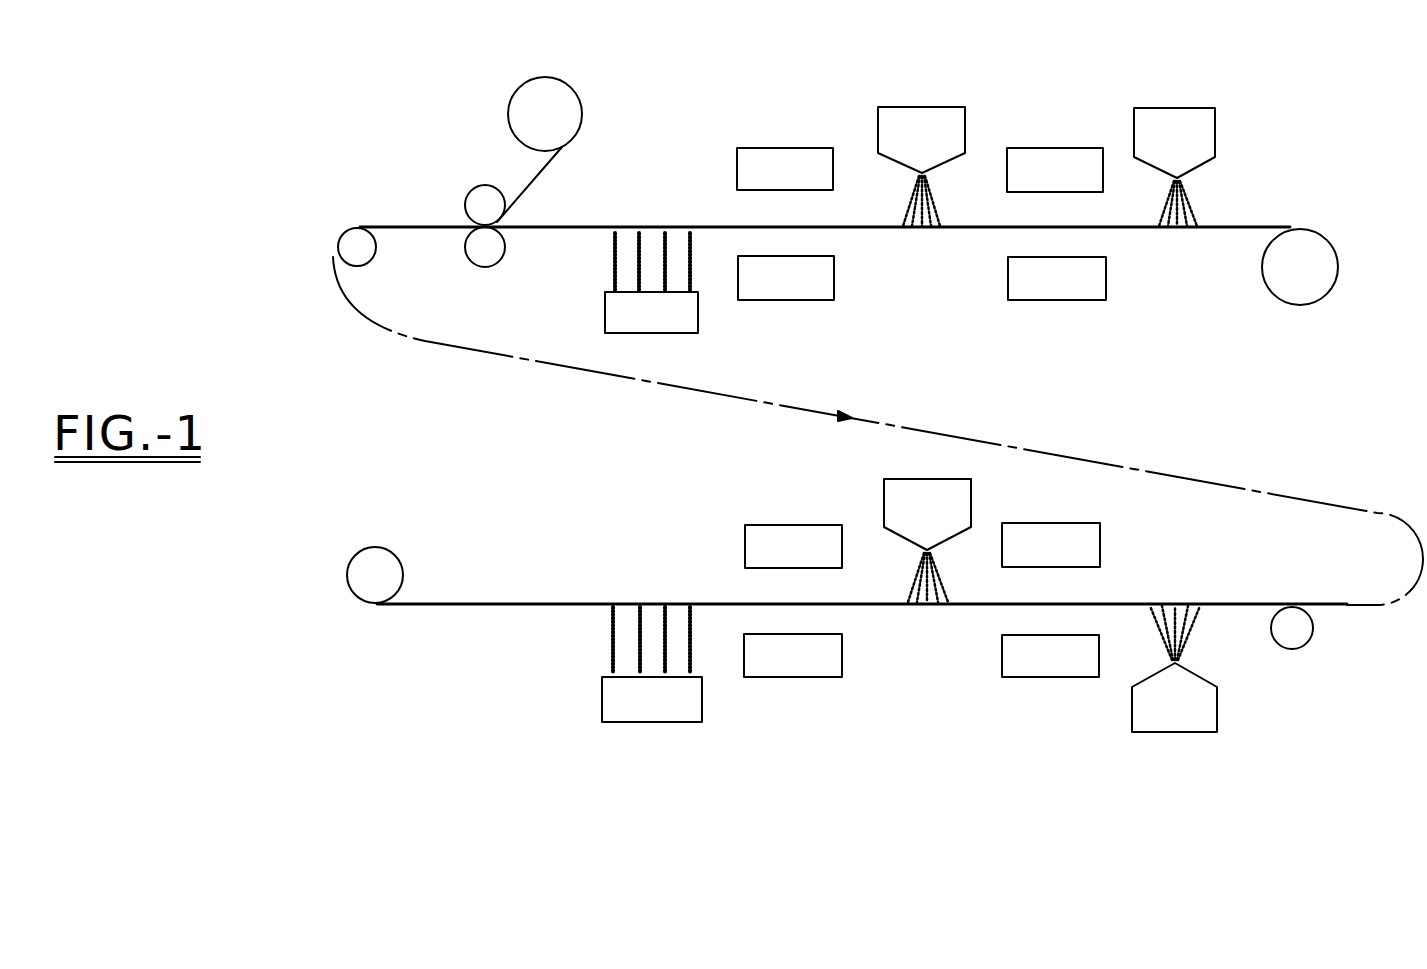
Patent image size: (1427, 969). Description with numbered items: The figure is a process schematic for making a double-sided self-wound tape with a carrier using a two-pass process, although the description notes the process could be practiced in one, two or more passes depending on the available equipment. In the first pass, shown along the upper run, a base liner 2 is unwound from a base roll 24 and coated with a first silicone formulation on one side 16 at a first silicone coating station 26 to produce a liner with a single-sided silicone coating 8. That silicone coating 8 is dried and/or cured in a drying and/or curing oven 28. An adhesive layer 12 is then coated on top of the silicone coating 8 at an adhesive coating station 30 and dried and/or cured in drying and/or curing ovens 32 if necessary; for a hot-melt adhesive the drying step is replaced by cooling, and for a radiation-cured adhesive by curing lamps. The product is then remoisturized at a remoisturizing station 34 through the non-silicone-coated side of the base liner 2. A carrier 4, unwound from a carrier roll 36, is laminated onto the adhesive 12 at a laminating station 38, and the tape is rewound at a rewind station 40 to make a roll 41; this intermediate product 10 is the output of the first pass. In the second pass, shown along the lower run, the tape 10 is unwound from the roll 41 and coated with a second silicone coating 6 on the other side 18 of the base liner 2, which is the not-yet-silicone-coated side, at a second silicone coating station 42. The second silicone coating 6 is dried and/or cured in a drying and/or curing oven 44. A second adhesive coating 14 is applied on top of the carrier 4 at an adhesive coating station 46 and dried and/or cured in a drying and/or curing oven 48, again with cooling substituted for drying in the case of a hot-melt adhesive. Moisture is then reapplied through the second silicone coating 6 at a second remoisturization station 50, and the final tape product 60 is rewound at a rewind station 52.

The base liner 2 is at (1360, 260).
The carrier 4 is at (525, 192).
The second silicone coating 6 is at (1167, 650).
The silicone coating 8 is at (1165, 200).
The intermediate product 10 is at (302, 257).
The adhesive layer 12 is at (913, 198).
The second adhesive coating 14 is at (917, 580).
The one side 16 is at (1218, 212).
The side 18 is at (1204, 653).
The base roll 24 is at (1336, 280).
The first silicone coating station 26 is at (1180, 108).
The drying and/or curing oven 28 is at (1066, 148).
The adhesive coating station 30 is at (922, 107).
The drying and/or curing ovens 32 is at (790, 121).
The remoisturizing station 34 is at (655, 333).
The carrier roll 36 is at (566, 84).
The laminating station 38 is at (474, 190).
The rewind station 40 is at (338, 240).
The roll 41 is at (384, 264).
The second silicone coating station 42 is at (1182, 732).
The drying and/or curing oven 44 is at (1064, 523).
The adhesive coating station 46 is at (930, 457).
The drying and/or curing oven 48 is at (795, 525).
The second remoisturization station 50 is at (647, 722).
The rewind station 52 is at (353, 620).
The final tape product 60 is at (490, 600).